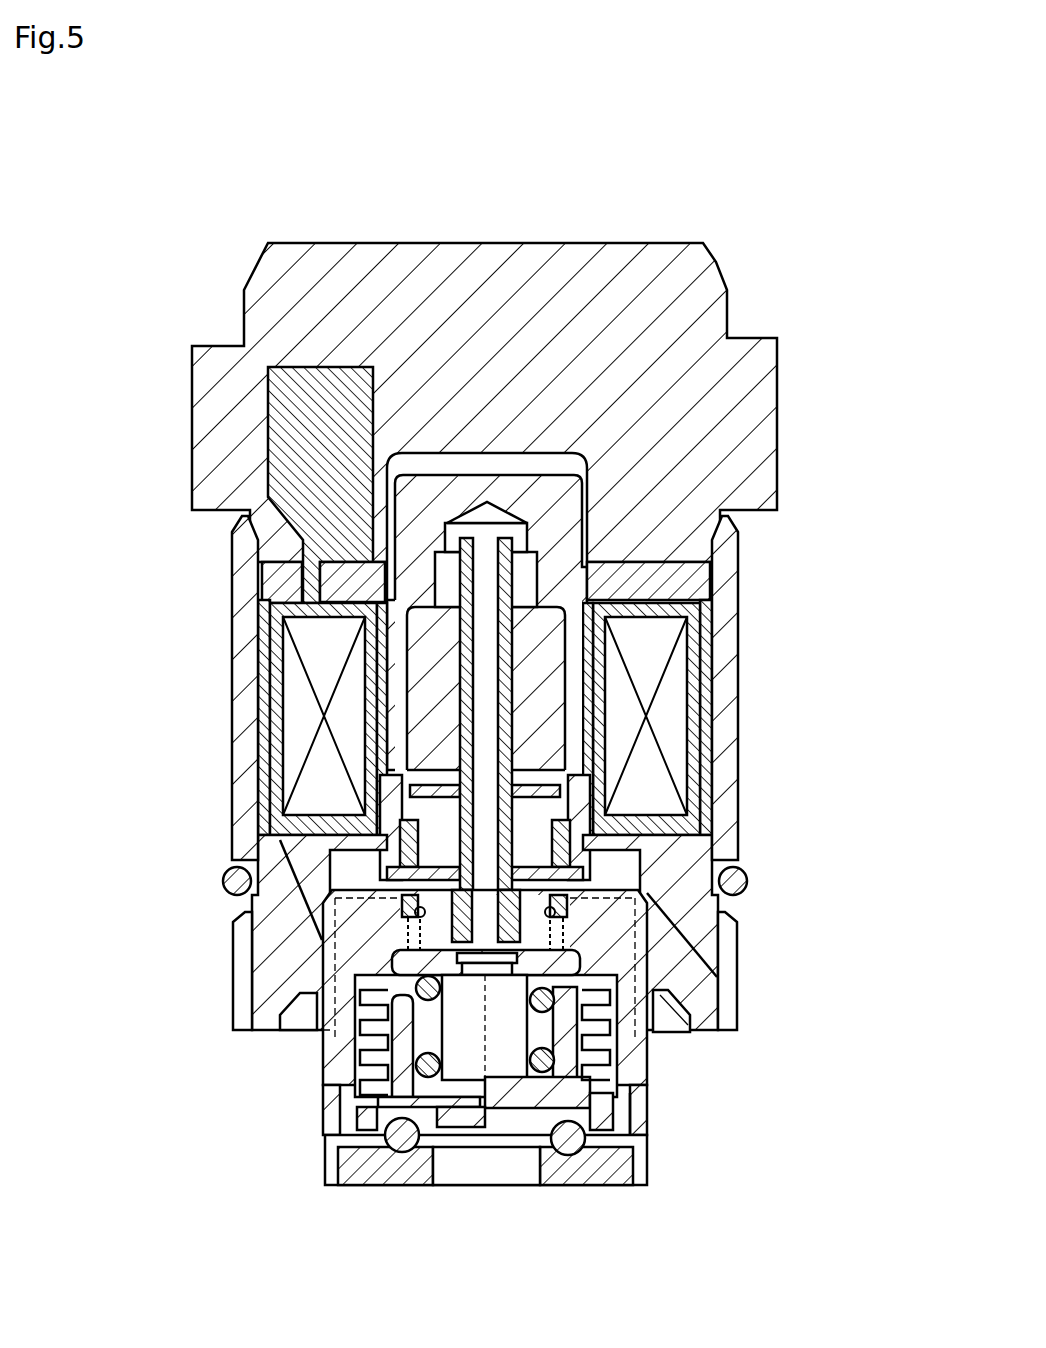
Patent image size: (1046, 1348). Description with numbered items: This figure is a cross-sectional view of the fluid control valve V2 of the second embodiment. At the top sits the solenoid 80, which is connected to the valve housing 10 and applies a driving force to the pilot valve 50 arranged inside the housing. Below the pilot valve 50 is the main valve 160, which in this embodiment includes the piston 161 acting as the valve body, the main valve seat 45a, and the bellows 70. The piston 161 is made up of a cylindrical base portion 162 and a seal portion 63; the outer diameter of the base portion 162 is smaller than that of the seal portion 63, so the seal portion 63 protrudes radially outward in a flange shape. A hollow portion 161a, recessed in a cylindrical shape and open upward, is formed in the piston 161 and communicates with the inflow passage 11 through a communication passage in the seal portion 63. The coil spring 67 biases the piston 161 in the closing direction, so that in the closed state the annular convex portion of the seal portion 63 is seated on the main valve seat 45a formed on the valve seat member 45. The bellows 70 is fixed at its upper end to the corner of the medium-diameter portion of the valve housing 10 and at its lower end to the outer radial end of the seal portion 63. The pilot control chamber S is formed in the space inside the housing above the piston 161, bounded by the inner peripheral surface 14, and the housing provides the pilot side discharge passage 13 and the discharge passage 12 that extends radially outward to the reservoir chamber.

The solenoid 80 is at (240, 256).
The fluid control valve V2 is at (824, 246).
The valve housing 10 is at (334, 884).
The pilot valve 50 is at (536, 938).
The main valve 160 is at (600, 966).
The base portion 162 is at (560, 975).
The piston 161 is at (721, 997).
The seal portion 63 is at (650, 1082).
The main valve seat 45a is at (645, 1107).
The discharge passage 12 is at (325, 1128).
The inflow passage 11 is at (447, 1157).
The valve seat member 45 is at (365, 1186).
The coil spring 67 is at (325, 1108).
The bellows 70 is at (330, 1088).
The inner peripheral surface 14 is at (335, 1063).
The pilot side discharge passage 13 is at (323, 1040).
The hollow portion 161a is at (400, 1015).
The pilot control chamber S is at (360, 967).